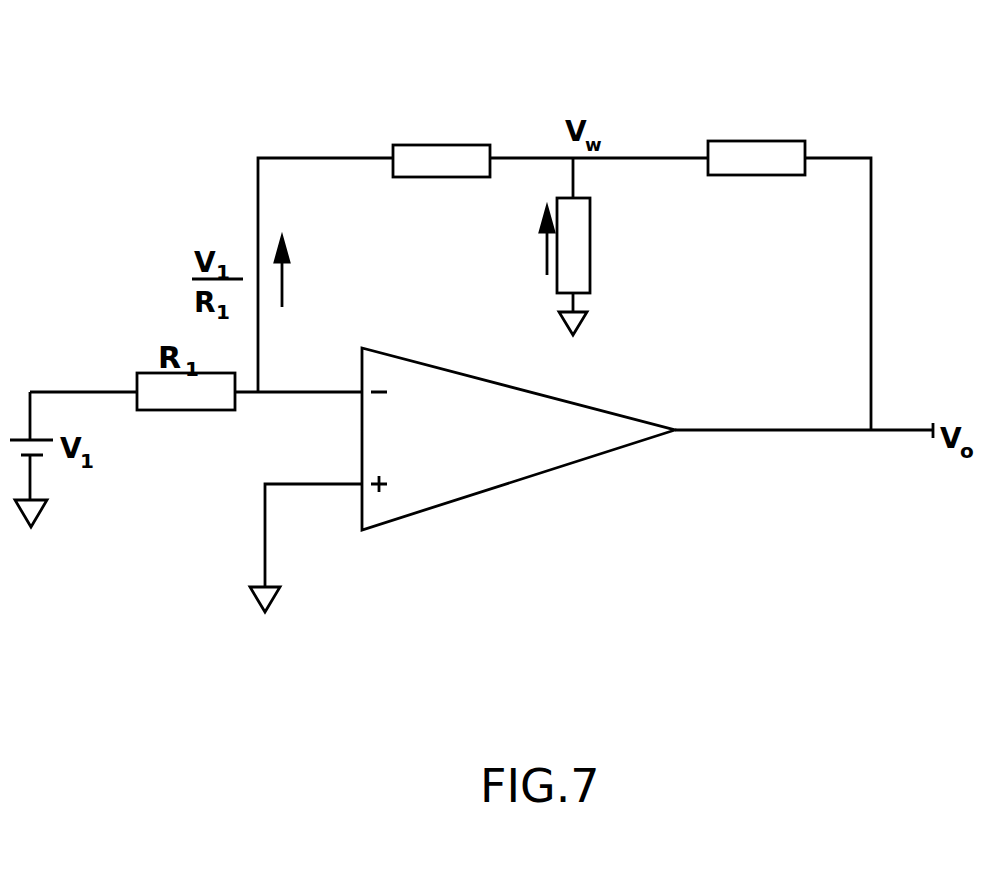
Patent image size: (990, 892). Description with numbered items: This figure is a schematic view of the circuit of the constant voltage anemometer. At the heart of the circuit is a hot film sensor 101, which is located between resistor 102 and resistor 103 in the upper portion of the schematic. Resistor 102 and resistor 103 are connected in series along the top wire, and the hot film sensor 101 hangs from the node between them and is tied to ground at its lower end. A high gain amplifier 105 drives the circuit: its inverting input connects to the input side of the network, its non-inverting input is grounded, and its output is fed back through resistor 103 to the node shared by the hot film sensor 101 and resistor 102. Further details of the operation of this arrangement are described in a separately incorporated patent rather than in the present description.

The hot film sensor 101 is at (595, 218).
The resistor 102 is at (472, 142).
The resistor 103 is at (790, 138).
The high gain amplifier 105 is at (530, 480).